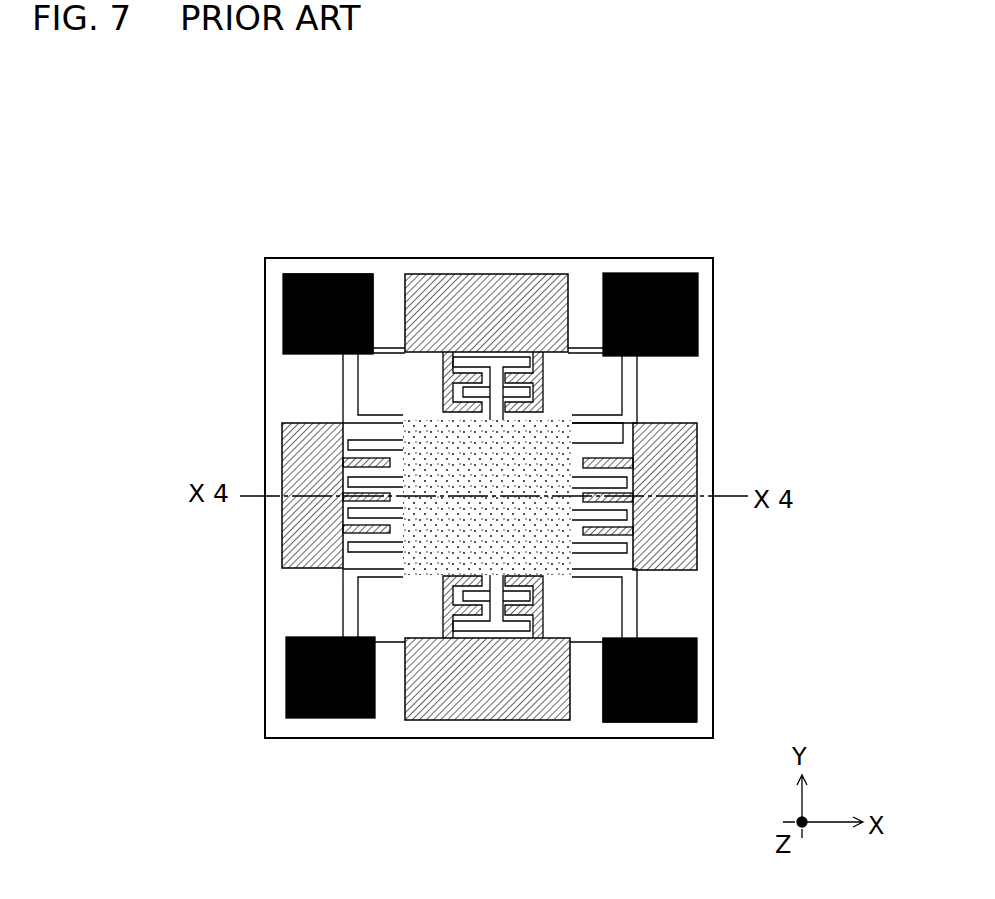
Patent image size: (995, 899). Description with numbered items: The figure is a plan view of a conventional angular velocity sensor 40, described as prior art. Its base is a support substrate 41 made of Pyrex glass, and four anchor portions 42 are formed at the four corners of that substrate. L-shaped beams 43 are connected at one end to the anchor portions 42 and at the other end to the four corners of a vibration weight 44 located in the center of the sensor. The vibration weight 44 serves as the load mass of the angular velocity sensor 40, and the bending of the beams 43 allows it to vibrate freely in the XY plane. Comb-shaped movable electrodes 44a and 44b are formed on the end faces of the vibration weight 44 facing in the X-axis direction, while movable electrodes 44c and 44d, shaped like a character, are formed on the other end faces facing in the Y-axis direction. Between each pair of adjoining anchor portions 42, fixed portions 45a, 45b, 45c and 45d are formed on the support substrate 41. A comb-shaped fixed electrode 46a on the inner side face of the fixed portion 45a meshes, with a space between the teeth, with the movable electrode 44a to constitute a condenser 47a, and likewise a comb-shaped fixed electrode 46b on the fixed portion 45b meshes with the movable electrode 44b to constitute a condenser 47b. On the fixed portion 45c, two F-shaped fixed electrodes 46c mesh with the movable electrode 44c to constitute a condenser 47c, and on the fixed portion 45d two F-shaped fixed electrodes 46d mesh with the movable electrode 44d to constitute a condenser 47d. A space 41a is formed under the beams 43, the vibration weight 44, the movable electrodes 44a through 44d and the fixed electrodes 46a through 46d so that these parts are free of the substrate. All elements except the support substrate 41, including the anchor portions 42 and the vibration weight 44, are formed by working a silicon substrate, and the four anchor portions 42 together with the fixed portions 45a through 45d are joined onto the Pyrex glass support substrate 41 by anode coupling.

The angular velocity sensor 40 is at (713, 177).
The support substrate 41 is at (713, 297).
The space 41a is at (322, 274).
The anchor portion 42 is at (672, 276).
The L-shaped beam 43 is at (350, 383).
The vibration weight 44 is at (505, 488).
The movable electrode 44a is at (607, 438).
The movable electrode 44b is at (347, 417).
The movable electrode 44c is at (497, 352).
The movable electrode 44d is at (491, 638).
The fixed portion 45a is at (683, 538).
The fixed portion 45b is at (298, 520).
The fixed portion 45c is at (398, 398).
The fixed portion 45d is at (420, 700).
The fixed electrode 46a is at (612, 466).
The fixed electrode 46b is at (390, 462).
The F-shaped fixed electrode 46c is at (443, 378).
The F-shaped fixed electrode 46d is at (445, 637).
The condenser 47a is at (850, 385).
The condenser 47b is at (120, 385).
The condenser 47c is at (550, 180).
The condenser 47d is at (578, 818).